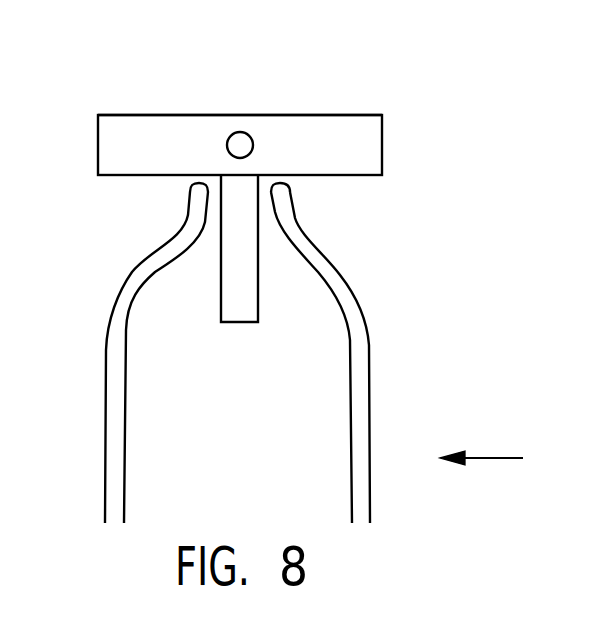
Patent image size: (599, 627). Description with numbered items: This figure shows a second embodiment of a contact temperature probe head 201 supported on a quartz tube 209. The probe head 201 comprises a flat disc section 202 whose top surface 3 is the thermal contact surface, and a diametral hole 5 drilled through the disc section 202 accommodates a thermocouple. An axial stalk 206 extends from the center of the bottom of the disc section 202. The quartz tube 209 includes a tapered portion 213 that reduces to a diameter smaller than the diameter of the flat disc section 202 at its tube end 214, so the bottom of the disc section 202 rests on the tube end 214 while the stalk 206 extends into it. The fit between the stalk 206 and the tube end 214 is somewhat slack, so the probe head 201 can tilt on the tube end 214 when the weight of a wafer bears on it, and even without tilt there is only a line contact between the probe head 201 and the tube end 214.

The top surface 3 is at (148, 115).
The diametral hole 5 is at (245, 132).
The probe head 201 is at (360, 93).
The flat disc section 202 is at (382, 137).
The axial stalk 206 is at (237, 301).
The quartz tube 209 is at (238, 369).
The tapered portion 213 is at (332, 265).
The tube end 214 is at (288, 183).